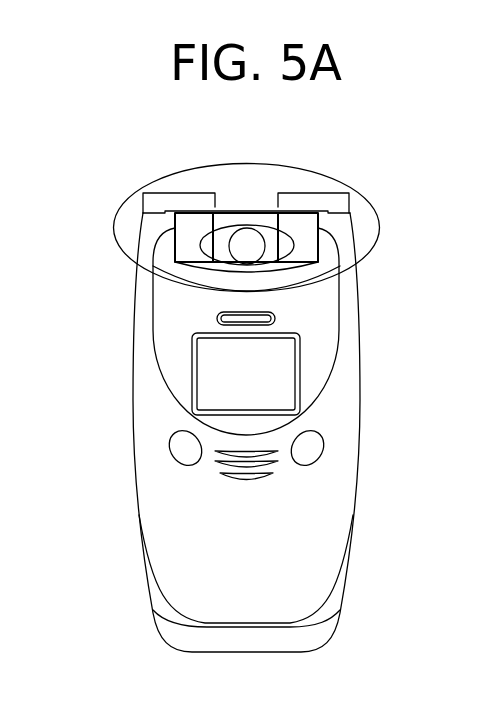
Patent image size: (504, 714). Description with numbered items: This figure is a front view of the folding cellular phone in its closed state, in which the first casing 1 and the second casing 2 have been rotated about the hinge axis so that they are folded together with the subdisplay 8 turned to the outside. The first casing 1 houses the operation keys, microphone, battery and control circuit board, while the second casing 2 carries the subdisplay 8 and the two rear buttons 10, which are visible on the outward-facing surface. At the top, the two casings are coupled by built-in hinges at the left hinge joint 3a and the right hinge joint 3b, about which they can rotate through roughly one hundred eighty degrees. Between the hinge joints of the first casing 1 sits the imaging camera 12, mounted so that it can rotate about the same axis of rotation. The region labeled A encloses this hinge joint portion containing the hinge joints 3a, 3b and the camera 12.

The first casing 1 is at (173, 625).
The second casing 2 is at (333, 505).
The left hinge joint 3a is at (182, 193).
The right hinge joint 3b is at (315, 193).
The subdisplay 8 is at (285, 375).
The rear buttons 10 is at (180, 444).
The imaging camera 12 is at (250, 238).
The hinge region A is at (377, 212).